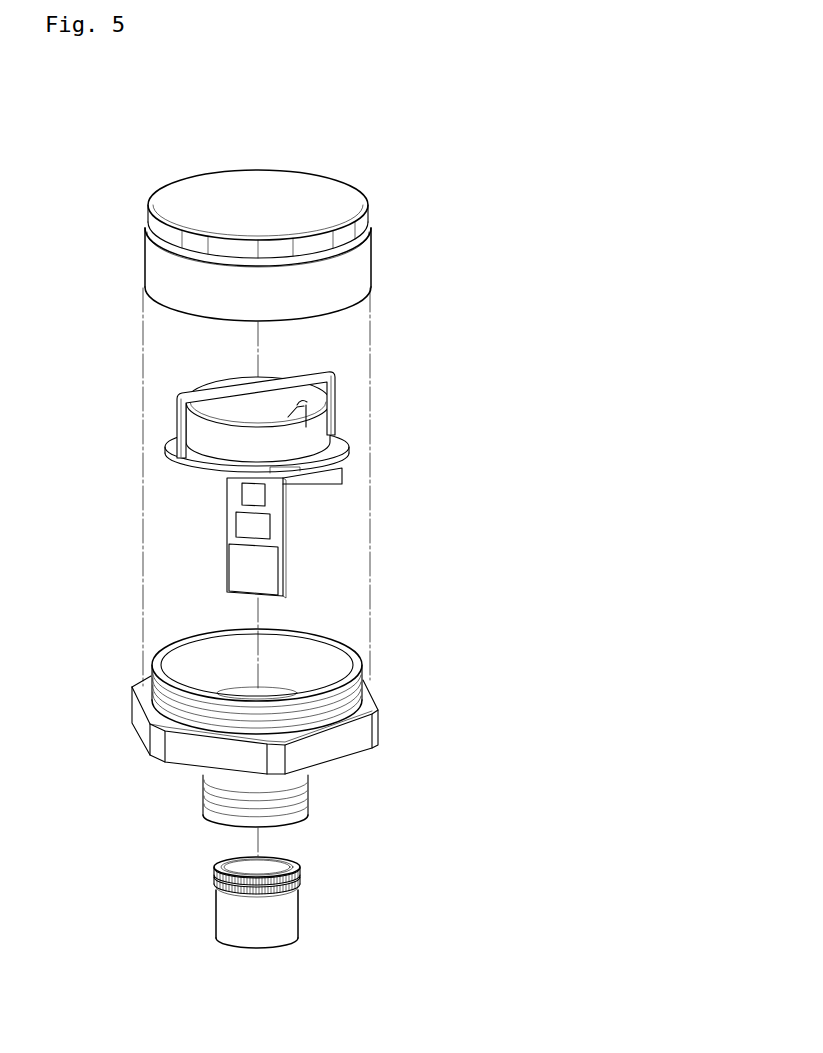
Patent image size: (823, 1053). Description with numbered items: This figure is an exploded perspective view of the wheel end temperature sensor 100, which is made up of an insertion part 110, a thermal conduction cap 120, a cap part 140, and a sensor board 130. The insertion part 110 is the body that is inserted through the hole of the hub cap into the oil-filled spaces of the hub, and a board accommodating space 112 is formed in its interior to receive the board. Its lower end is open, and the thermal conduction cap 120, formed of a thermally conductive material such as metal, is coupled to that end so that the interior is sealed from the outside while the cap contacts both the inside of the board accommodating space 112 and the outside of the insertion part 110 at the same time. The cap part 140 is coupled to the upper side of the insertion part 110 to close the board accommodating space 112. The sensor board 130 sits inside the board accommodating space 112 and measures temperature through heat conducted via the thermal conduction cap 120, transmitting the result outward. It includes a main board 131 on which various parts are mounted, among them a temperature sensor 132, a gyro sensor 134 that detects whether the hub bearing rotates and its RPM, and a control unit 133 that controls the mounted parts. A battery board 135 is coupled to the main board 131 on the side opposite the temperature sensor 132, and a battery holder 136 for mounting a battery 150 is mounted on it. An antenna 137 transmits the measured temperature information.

The wheel end temperature sensor 100 is at (102, 123).
The insertion part 110 is at (319, 720).
The board accommodating space 112 is at (315, 667).
The thermal conduction cap 120 is at (215, 908).
The sensor board 130 is at (265, 545).
The main board 131 is at (284, 541).
The temperature sensor 132 is at (242, 565).
The control unit 133 is at (246, 522).
The gyro sensor 134 is at (250, 492).
The battery board 135 is at (338, 446).
The battery holder 136 is at (327, 423).
The antenna 137 is at (178, 410).
The cap part 140 is at (355, 268).
The battery 150 is at (280, 397).